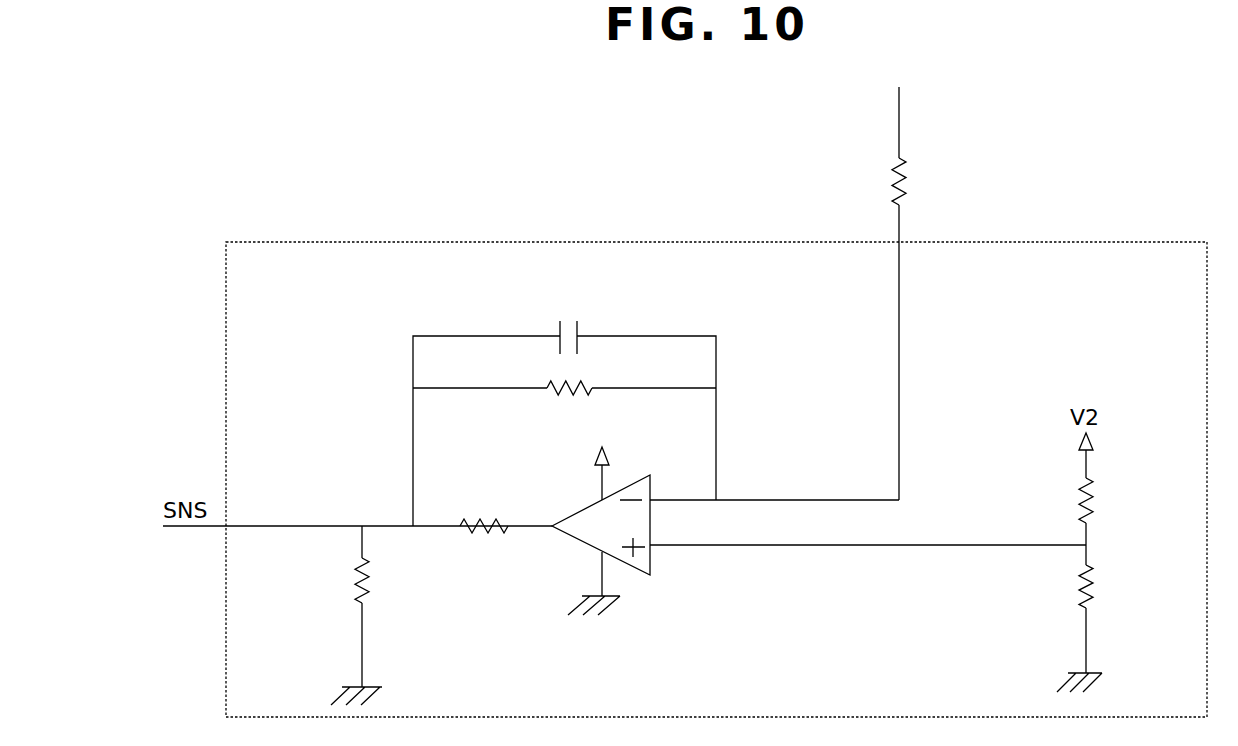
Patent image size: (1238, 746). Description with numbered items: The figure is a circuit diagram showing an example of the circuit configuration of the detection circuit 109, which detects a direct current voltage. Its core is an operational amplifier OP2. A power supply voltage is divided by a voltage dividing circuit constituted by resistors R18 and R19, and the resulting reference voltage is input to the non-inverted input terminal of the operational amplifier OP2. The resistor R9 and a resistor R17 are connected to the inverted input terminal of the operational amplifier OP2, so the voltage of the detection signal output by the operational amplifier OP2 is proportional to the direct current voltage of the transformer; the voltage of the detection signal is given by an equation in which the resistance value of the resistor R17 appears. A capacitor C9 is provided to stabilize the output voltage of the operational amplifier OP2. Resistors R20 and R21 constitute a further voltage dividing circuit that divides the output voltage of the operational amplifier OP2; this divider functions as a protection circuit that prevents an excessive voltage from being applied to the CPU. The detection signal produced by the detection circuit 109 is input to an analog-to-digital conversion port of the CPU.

The detection circuit 109 is at (411, 242).
The capacitor C9 is at (570, 318).
The resistor R17 is at (592, 386).
The resistor R20 is at (490, 520).
The resistor R21 is at (355, 575).
The operational amplifier OP2 is at (650, 563).
The resistor R9 is at (906, 163).
The resistor R18 is at (1092, 490).
The resistor R19 is at (1092, 575).